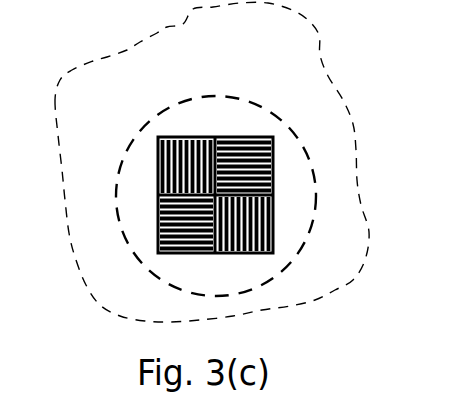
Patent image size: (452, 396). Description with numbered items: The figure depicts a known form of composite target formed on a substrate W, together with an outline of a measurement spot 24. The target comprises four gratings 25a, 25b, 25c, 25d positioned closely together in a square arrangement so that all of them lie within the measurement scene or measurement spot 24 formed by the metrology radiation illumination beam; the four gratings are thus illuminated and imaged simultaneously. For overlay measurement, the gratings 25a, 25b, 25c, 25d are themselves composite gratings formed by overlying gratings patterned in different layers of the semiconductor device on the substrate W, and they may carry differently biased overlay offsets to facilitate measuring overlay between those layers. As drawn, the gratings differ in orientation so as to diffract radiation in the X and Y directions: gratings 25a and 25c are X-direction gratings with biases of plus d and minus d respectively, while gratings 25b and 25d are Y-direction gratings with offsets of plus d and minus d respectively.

The substrate W is at (140, 42).
The measurement spot 24 is at (157, 114).
The grating 25a is at (157, 180).
The grating 25b is at (157, 233).
The grating 25c is at (273, 229).
The grating 25d is at (273, 167).